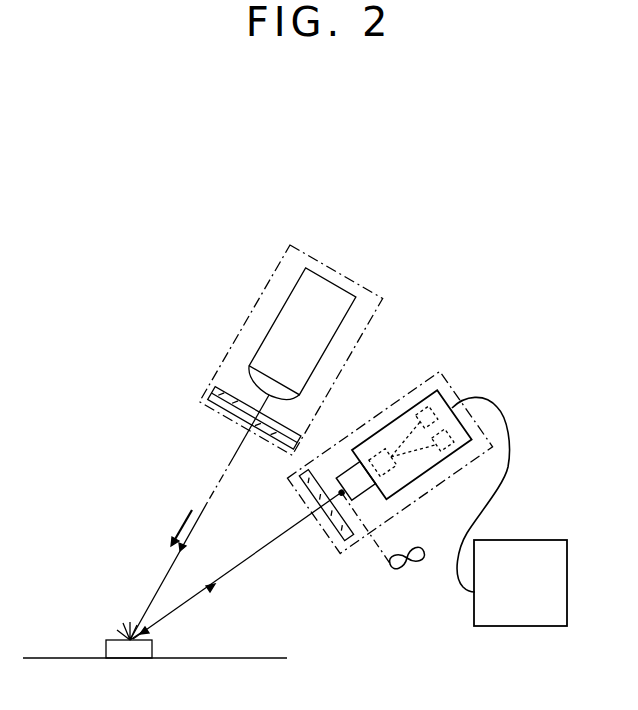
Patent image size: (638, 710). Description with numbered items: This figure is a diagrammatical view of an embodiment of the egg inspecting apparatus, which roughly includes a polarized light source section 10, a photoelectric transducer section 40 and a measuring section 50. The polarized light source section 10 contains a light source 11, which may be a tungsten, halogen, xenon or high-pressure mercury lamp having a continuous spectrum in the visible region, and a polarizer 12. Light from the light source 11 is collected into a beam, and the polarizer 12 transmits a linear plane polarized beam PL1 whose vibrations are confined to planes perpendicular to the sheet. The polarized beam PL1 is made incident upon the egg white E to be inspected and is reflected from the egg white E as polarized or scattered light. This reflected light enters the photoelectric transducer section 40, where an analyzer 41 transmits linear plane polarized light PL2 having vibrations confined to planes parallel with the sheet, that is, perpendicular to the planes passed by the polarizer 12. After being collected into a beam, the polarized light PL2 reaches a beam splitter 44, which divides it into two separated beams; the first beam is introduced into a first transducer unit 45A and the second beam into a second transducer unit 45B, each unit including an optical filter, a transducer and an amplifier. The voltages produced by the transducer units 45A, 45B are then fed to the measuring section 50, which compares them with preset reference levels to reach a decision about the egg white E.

The polarized light source section 10 is at (327, 267).
The light source 11 is at (292, 290).
The polarizer 12 is at (220, 407).
The photoelectric transducer section 40 is at (448, 380).
The analyzer 41 is at (338, 546).
The beam splitter 44 is at (378, 452).
The first transducer unit 45A is at (448, 456).
The second transducer unit 45B is at (422, 408).
The measuring section 50 is at (540, 543).
The egg white E is at (153, 647).
The polarized beam PL1 is at (194, 517).
The polarized light PL2 is at (236, 566).